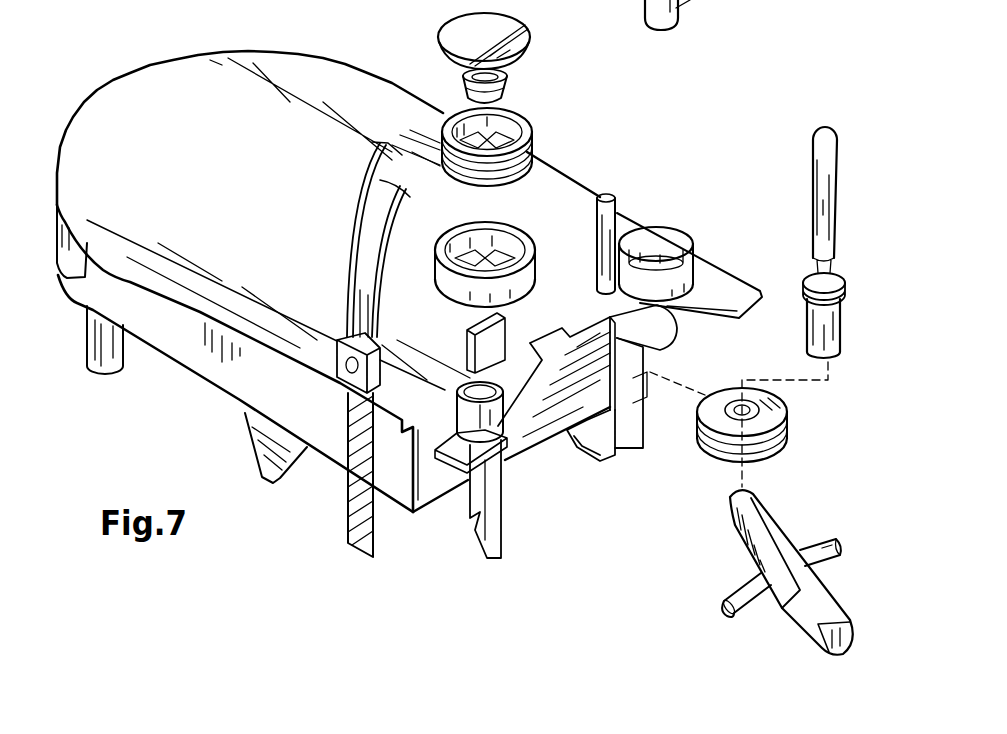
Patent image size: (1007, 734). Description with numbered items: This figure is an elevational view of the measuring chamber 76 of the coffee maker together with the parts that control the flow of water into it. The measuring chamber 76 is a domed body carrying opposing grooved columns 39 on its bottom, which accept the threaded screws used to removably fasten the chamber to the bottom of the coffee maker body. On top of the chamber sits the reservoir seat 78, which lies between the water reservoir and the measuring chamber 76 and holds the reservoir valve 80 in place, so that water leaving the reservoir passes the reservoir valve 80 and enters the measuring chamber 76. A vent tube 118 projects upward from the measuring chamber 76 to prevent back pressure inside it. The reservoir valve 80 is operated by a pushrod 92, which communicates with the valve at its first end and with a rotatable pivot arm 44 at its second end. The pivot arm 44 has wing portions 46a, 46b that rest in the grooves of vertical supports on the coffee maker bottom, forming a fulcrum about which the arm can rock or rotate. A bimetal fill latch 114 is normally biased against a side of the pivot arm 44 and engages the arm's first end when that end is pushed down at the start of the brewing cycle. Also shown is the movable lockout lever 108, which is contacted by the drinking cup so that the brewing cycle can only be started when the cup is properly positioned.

The measuring chamber 76 is at (197, 98).
The reservoir valve 80 is at (468, 37).
The reservoir seat 78 is at (438, 112).
The vent tube 118 is at (623, 16).
The pushrod 92 is at (822, 250).
The grooved columns 39 is at (108, 377).
The bimetal fill latch 114 is at (350, 492).
The lockout lever 108 is at (643, 425).
The pivot arm 44 is at (788, 547).
The wing portion 46a is at (840, 547).
The wing portion 46b is at (737, 588).